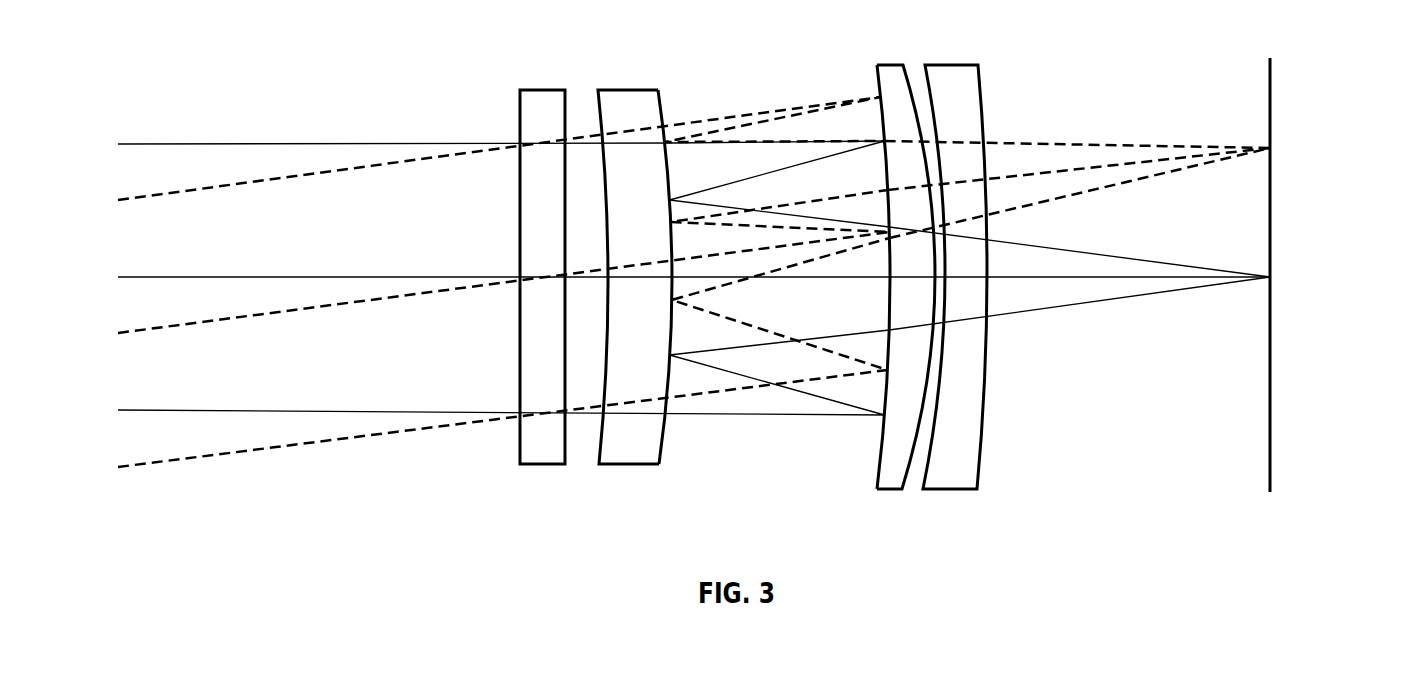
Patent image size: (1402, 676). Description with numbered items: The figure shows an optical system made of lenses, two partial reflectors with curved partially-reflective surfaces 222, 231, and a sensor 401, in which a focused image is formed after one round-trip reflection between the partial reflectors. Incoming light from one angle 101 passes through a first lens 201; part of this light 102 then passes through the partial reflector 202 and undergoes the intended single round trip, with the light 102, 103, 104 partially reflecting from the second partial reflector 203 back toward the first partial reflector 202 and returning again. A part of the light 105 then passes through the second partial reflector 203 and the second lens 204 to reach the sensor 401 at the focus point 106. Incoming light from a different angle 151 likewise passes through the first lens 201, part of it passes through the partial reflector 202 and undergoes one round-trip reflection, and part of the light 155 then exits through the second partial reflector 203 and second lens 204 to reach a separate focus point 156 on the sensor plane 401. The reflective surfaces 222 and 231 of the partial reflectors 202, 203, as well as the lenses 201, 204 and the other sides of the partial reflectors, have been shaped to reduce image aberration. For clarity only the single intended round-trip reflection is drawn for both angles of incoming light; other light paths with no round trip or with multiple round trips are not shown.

The incoming light from one angle 101 is at (174, 144).
The part of the light passing through the partial reflector 102 is at (838, 140).
The reflected light path 103 is at (744, 178).
The reflected light path 104 is at (872, 225).
The part of the light exiting the second partial reflector 105 is at (1172, 263).
The focus point 106 is at (1270, 278).
The incoming light from a different angle 151 is at (195, 460).
The part of the light exiting toward the sensor 155 is at (1178, 170).
The focus point 156 is at (1270, 150).
The first lens 201 is at (550, 105).
The partial reflector 202 is at (671, 253).
The second partial reflector 203 is at (866, 253).
The second lens 204 is at (960, 75).
The partially-reflective surface 222 is at (661, 430).
The partially-reflective surface 231 is at (877, 458).
The sensor 401 is at (1270, 455).